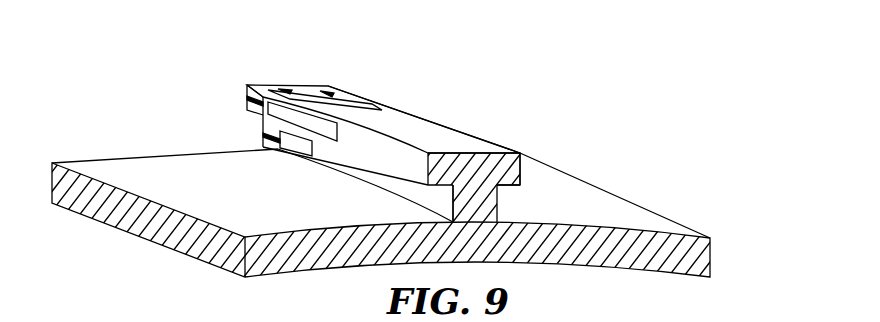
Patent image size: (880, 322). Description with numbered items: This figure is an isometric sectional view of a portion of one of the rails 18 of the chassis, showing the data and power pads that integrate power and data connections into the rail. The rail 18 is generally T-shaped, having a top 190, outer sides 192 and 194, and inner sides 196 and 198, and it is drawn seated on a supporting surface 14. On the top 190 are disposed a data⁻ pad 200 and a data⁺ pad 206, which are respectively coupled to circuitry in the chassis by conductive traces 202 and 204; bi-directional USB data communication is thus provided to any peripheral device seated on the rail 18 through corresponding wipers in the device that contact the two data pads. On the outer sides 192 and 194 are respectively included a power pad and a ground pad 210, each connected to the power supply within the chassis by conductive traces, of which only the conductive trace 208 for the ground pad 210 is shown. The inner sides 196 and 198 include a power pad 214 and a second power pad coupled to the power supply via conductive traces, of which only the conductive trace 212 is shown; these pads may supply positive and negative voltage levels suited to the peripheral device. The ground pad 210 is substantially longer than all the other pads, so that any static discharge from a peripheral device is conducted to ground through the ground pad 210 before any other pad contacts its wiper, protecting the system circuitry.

The substrate 14 is at (167, 163).
The rail 18 is at (461, 81).
The top 190 is at (462, 148).
The outer side 192 is at (520, 158).
The outer side 194 is at (352, 146).
The inner side 196 is at (497, 205).
The inner side 198 is at (377, 186).
The data⁻ pad 200 is at (354, 96).
The conductive trace 202 is at (325, 87).
The conductive trace 204 is at (284, 90).
The data⁺ pad 206 is at (382, 103).
The conductive trace 208 is at (247, 97).
The ground pad 210 is at (243, 107).
The conductive trace 212 is at (263, 136).
The power pad 214 is at (280, 148).